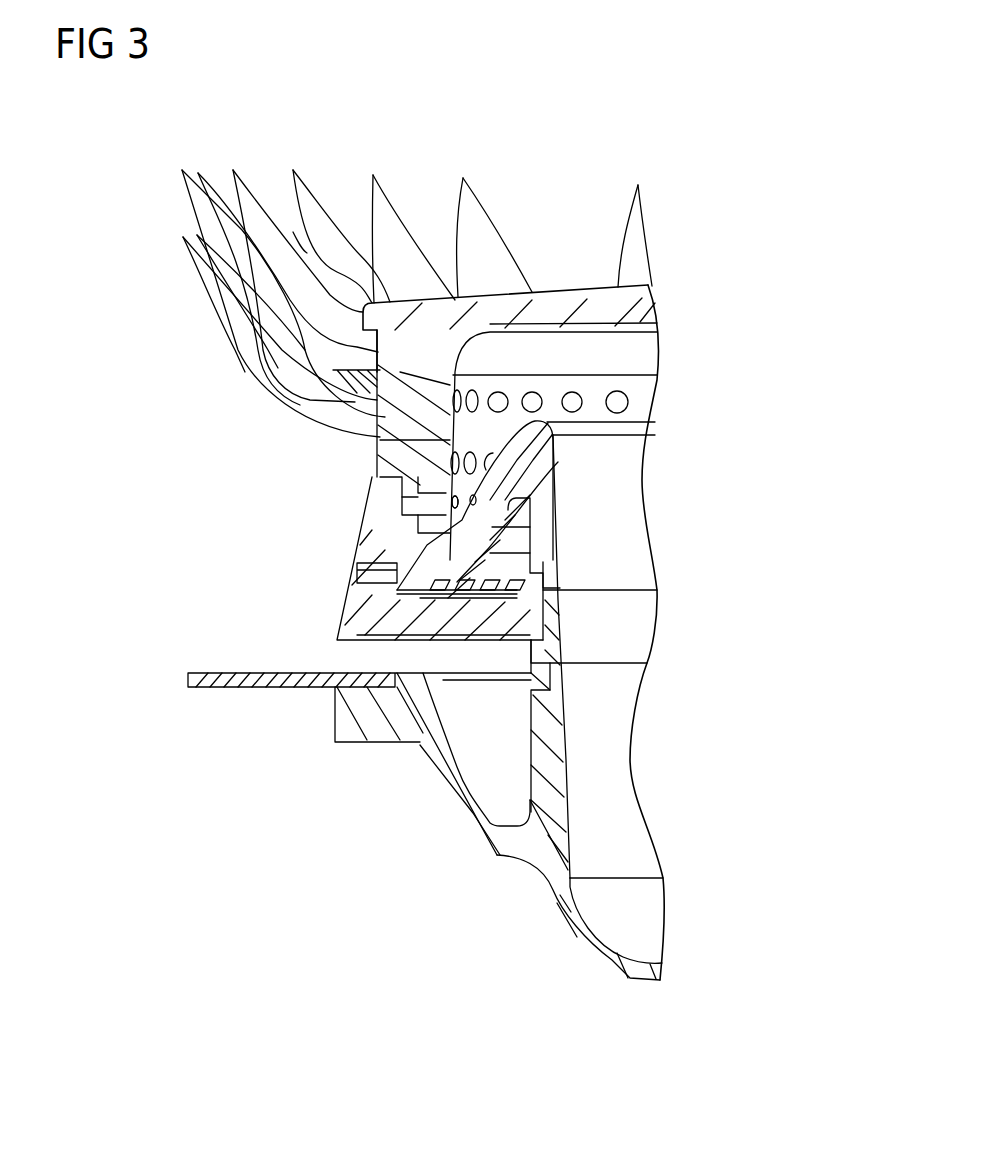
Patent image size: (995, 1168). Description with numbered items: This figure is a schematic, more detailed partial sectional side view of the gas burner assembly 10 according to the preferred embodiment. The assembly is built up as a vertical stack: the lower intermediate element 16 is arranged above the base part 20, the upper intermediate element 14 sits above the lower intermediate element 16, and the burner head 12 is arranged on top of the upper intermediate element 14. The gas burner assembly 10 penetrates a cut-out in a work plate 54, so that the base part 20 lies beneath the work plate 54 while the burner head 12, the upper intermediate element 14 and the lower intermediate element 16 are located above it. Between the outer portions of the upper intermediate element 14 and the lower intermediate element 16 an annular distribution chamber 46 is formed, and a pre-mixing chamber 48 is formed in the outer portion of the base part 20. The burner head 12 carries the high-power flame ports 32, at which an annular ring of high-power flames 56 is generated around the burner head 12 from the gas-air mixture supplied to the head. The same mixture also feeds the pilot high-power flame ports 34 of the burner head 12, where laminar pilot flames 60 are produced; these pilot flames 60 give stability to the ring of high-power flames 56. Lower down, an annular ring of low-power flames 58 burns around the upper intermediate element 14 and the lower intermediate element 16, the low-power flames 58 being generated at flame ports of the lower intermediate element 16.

The gas burner assembly 10 is at (683, 160).
The burner head 12 is at (582, 304).
The upper intermediate element 14 is at (522, 466).
The lower intermediate element 16 is at (548, 628).
The base part 20 is at (507, 840).
The high-power flame ports 32 is at (418, 440).
The pilot high-power flame ports 34 is at (470, 500).
The distribution chamber 46 is at (483, 568).
The pre-mixing chamber 48 is at (503, 750).
The work plate 54 is at (203, 688).
The high-power flames 56 is at (242, 332).
The low-power flames 58 is at (362, 567).
The pilot flames 60 is at (378, 468).